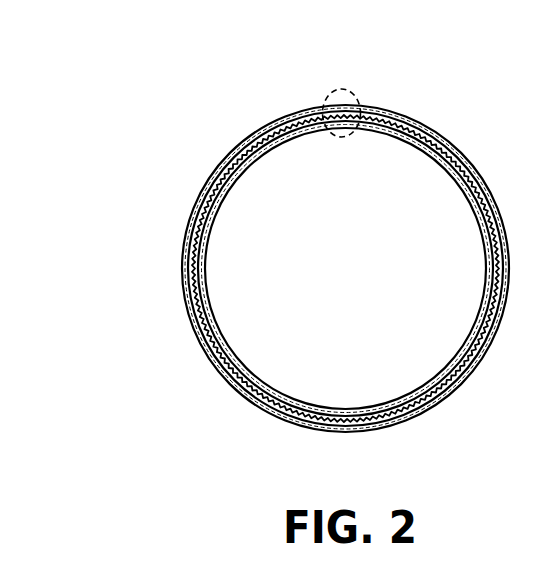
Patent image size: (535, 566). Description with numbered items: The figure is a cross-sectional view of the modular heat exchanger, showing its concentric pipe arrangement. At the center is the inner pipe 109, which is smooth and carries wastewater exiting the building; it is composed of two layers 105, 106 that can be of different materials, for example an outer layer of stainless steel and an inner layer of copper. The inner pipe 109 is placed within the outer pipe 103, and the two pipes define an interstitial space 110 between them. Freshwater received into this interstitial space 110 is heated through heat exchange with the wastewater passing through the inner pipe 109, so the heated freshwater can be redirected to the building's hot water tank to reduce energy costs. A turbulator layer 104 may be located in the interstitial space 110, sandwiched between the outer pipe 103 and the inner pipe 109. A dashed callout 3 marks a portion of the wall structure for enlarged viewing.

The detail region shown in FIG. 3 is at (352, 93).
The outer pipe 103 is at (463, 162).
The turbulator layer 104 is at (225, 163).
The outer layer of inner pipe 105 is at (193, 238).
The inner layer of inner pipe 106 is at (200, 254).
The inner pipe 109 is at (75, 202).
The interstitial space 110 is at (263, 130).